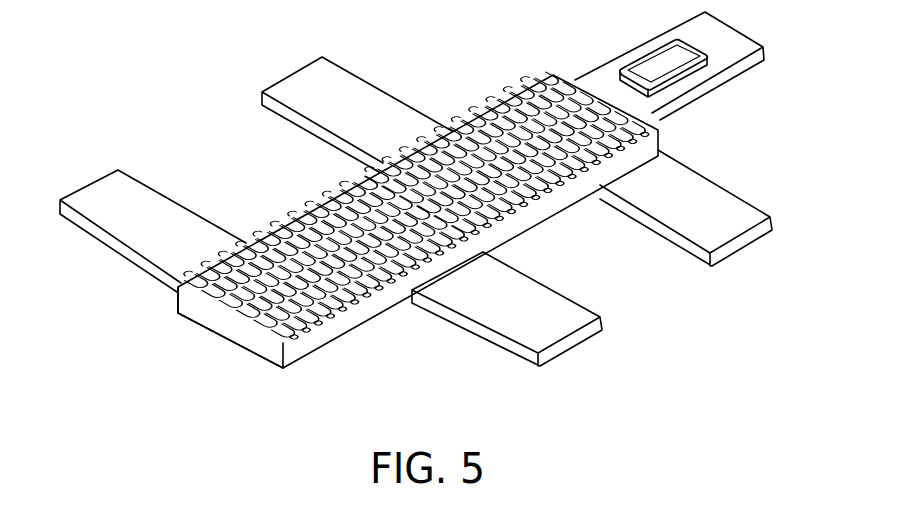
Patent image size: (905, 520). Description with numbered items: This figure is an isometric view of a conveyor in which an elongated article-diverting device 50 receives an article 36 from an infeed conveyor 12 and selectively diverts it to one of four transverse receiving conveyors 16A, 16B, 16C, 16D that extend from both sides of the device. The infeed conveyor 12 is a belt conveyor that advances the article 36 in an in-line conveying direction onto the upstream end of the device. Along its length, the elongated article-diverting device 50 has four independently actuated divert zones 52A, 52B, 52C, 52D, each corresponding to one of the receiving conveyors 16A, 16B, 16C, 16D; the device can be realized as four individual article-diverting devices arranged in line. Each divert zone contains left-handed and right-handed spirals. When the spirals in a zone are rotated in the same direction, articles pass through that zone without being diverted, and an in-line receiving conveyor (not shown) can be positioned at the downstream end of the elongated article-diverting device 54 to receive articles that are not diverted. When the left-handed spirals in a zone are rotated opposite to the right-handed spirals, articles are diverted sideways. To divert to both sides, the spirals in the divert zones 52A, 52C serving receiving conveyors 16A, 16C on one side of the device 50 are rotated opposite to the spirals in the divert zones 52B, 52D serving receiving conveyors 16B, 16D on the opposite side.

The infeed conveyor 12 is at (679, 91).
The article 36 is at (655, 48).
The transverse receiving conveyor 16A is at (718, 190).
The transverse receiving conveyor 16B is at (342, 80).
The transverse receiving conveyor 16C is at (540, 292).
The transverse receiving conveyor 16D is at (157, 203).
The elongated article-diverting device 50 is at (224, 332).
The divert zone 52A is at (538, 72).
The divert zone 52B is at (593, 197).
The divert zone 52C is at (363, 168).
The divert zone 52D is at (387, 313).
The elongated article-diverting device 54 is at (177, 303).